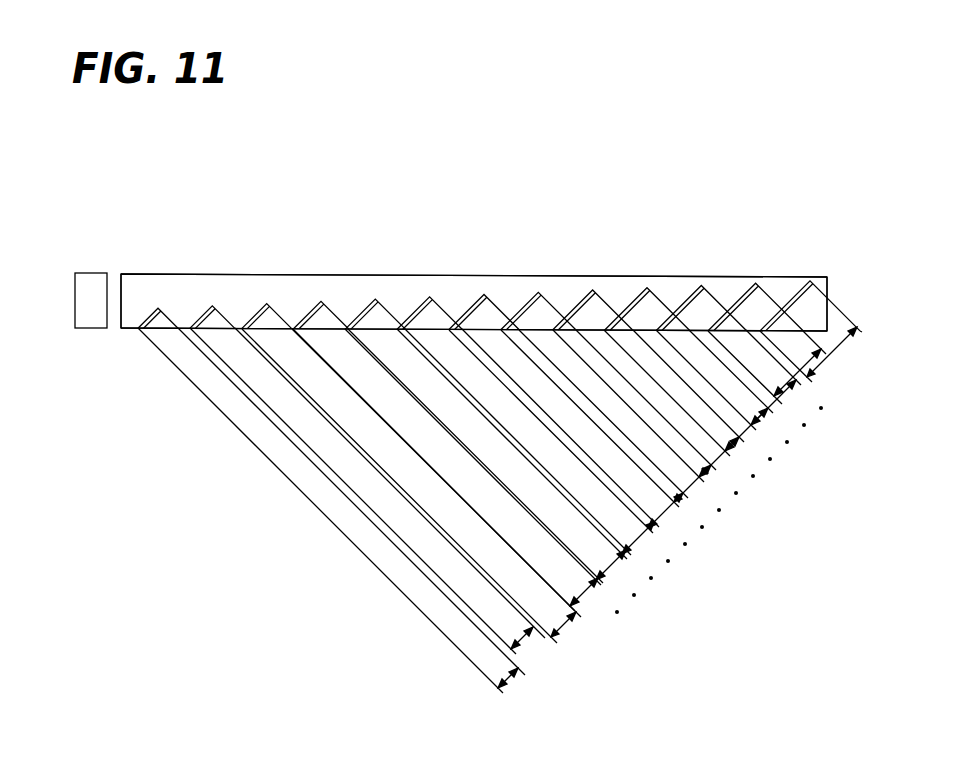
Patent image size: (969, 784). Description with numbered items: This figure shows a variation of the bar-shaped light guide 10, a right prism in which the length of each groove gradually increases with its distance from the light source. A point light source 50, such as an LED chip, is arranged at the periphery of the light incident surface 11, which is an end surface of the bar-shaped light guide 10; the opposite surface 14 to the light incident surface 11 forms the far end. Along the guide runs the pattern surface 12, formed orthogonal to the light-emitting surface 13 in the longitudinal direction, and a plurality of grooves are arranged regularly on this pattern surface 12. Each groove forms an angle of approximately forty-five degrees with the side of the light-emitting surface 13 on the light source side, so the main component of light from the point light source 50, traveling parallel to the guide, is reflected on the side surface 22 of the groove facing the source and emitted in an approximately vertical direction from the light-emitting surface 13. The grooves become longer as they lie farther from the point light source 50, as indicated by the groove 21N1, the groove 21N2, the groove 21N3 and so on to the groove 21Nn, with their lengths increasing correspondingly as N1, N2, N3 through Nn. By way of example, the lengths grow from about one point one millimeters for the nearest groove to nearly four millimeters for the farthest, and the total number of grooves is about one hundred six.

The bar-shaped light guide 10 is at (563, 275).
The light incident surface 11 is at (119, 290).
The pattern surface 12 is at (623, 287).
The light-emitting surface 13 is at (472, 275).
The opposite surface to the light incident surface 14 is at (828, 278).
The groove 21N1 is at (150, 312).
The groove 21N2 is at (200, 310).
The groove 21N3 is at (255, 312).
The groove 21Nn is at (788, 298).
The side surface of the groove 22 is at (413, 310).
The point light source 50 is at (75, 297).
The length of the groove N1 is at (337, 519).
The length of the groove N2 is at (371, 499).
The length of the groove N3 is at (417, 491).
The length of the groove Nn is at (811, 357).